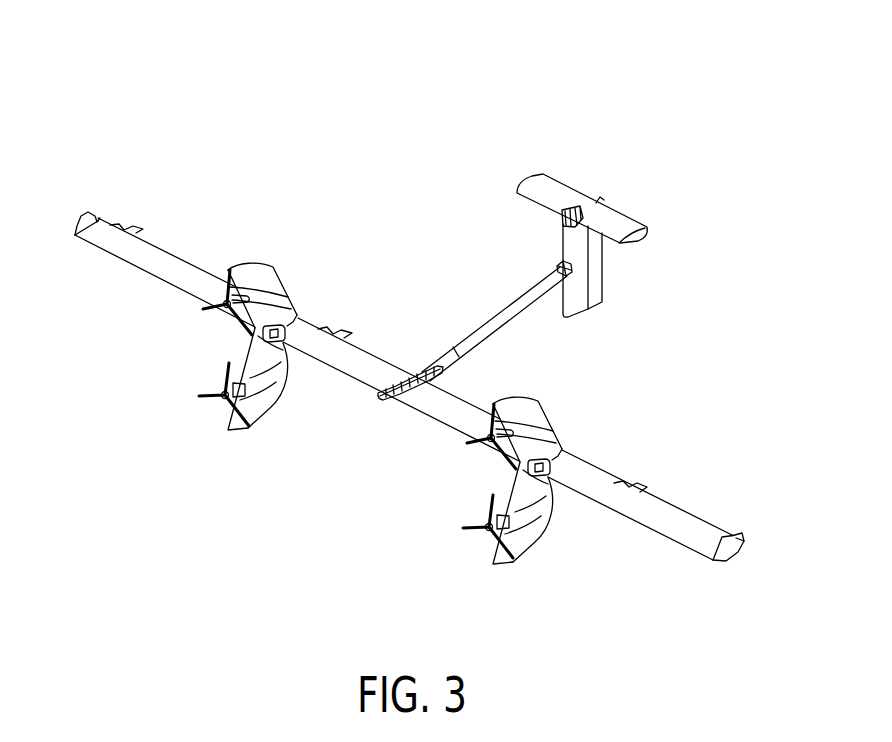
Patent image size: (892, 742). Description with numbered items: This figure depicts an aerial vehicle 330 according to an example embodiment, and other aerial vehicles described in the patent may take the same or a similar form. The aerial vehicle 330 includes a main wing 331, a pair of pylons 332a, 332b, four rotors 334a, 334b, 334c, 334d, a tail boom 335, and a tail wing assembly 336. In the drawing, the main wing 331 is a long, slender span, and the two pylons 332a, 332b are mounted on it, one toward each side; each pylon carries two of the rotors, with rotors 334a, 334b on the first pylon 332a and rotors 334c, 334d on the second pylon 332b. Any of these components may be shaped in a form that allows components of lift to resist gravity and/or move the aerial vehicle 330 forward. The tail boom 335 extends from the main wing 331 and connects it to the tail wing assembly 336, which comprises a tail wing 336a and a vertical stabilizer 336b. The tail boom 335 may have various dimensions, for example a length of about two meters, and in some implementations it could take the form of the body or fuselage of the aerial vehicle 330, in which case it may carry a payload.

The aerial vehicle 330 is at (627, 117).
The main wing 331 is at (184, 274).
The pylon 332a is at (253, 272).
The pylon 332b is at (513, 407).
The rotor 334a is at (221, 315).
The rotor 334b is at (221, 408).
The rotor 334c is at (485, 455).
The rotor 334d is at (484, 542).
The tail boom 335 is at (480, 330).
The tail wing assembly 336 is at (661, 229).
The tail wing 336a is at (622, 227).
The vertical stabilizer 336b is at (600, 277).